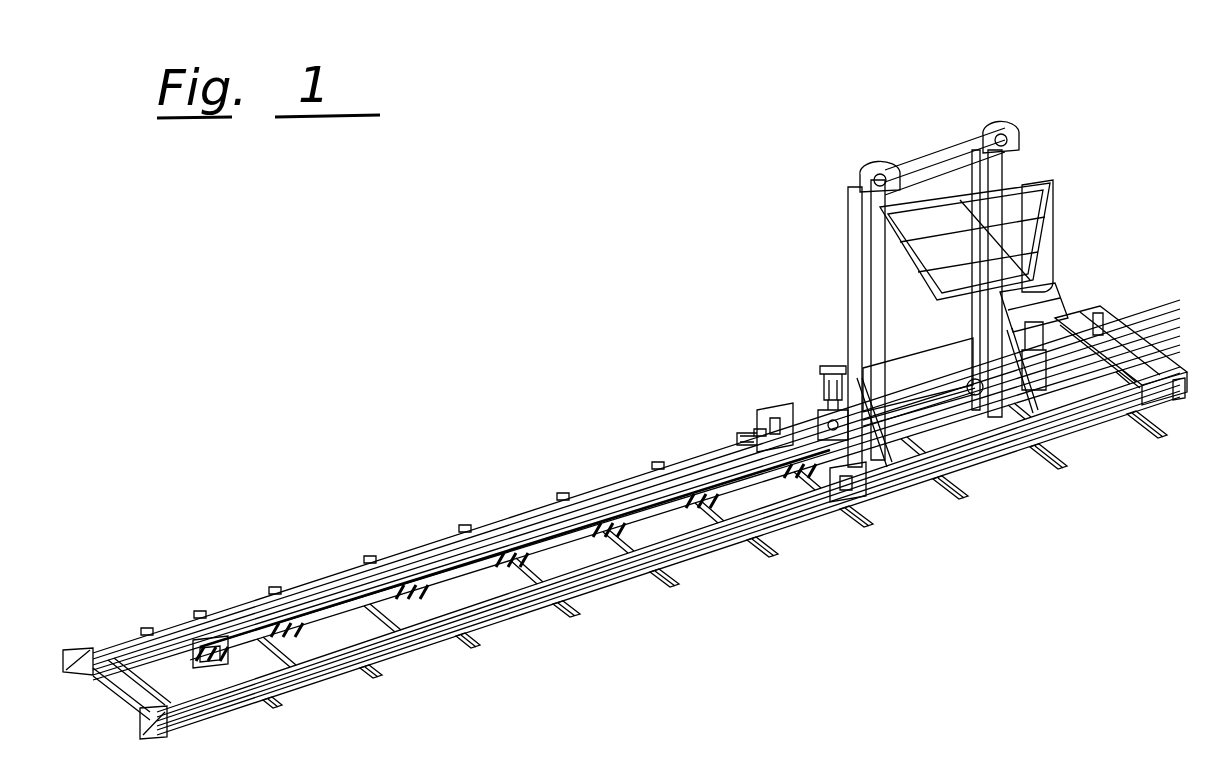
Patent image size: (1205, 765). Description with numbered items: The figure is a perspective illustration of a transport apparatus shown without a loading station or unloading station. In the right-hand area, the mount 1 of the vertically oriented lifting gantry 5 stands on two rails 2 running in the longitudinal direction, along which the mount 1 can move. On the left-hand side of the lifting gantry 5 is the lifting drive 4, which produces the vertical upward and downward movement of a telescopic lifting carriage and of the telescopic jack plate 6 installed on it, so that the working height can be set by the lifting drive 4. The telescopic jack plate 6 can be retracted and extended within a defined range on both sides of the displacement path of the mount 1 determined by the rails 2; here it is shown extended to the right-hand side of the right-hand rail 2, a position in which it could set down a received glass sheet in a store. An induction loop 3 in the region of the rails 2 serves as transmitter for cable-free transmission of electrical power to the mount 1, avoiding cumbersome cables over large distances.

The mount 1 is at (982, 447).
The rails 2 is at (568, 582).
The induction loop 3 is at (393, 603).
The lifting drive 4 is at (827, 388).
The lifting gantry 5 is at (847, 323).
The telescopic jack plate 6 is at (1060, 313).